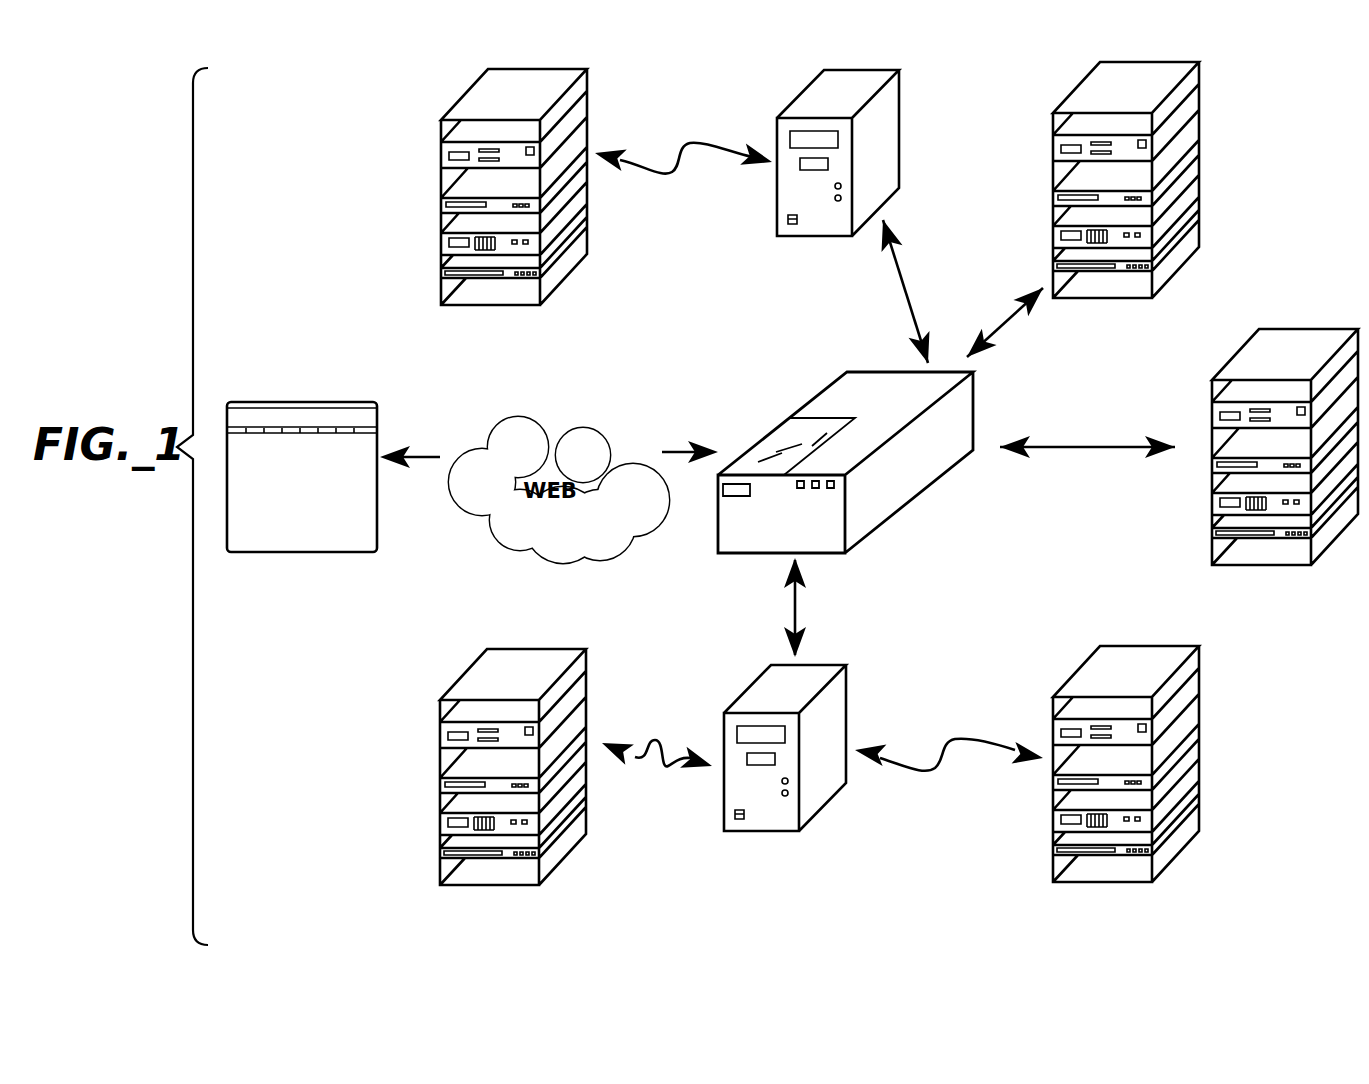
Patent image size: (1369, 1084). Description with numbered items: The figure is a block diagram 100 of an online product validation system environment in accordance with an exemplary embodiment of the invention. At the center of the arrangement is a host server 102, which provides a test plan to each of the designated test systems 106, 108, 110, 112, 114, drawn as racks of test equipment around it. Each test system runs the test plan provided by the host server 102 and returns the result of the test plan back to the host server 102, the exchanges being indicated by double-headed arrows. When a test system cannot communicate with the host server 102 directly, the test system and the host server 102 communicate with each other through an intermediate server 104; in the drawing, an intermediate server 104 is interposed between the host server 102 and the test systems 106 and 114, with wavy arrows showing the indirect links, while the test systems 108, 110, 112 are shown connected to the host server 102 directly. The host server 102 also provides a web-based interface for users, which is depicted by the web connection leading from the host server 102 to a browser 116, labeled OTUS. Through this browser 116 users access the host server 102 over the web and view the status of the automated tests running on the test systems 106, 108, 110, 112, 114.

The block diagram 100 is at (306, 102).
The host server 102 is at (819, 395).
The intermediate server 104 is at (798, 98).
The test system 106 is at (460, 100).
The test system 108 is at (1072, 93).
The test system 110 is at (1294, 328).
The test system 112 is at (1072, 678).
The test system 114 is at (460, 680).
The browser 116 is at (317, 400).